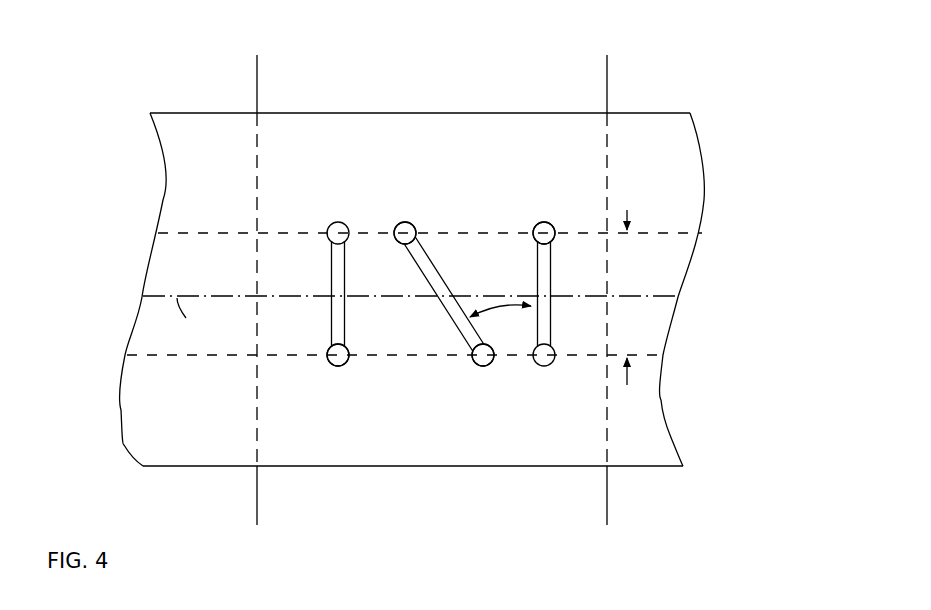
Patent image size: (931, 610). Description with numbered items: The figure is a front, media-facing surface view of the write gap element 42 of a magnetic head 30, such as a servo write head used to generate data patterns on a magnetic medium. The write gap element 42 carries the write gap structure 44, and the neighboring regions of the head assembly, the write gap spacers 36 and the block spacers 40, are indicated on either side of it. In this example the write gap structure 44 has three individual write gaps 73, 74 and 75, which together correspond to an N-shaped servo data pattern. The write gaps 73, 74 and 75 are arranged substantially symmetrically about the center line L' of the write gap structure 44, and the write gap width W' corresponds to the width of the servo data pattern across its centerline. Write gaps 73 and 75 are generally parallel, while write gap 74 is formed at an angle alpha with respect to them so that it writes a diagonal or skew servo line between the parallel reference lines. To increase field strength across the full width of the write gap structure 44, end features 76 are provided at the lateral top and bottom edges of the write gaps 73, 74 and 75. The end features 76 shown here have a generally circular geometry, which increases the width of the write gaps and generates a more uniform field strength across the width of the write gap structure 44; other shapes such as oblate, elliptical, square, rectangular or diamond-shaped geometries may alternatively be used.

The magnetic head 30 is at (75, 80).
The write gap spacers 36 is at (367, 93).
The block spacers 40 is at (180, 93).
The write gap element 42 is at (551, 110).
The write gap structure 44 is at (332, 184).
The write gap 73 is at (332, 279).
The write gap 74 is at (436, 272).
The write gap 75 is at (553, 278).
The end features 76 is at (538, 223).